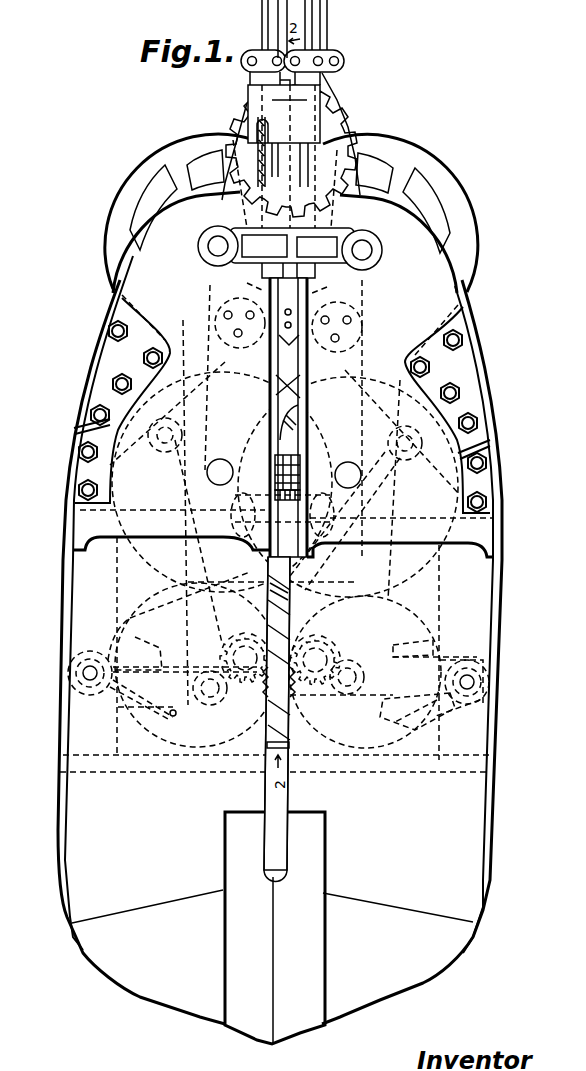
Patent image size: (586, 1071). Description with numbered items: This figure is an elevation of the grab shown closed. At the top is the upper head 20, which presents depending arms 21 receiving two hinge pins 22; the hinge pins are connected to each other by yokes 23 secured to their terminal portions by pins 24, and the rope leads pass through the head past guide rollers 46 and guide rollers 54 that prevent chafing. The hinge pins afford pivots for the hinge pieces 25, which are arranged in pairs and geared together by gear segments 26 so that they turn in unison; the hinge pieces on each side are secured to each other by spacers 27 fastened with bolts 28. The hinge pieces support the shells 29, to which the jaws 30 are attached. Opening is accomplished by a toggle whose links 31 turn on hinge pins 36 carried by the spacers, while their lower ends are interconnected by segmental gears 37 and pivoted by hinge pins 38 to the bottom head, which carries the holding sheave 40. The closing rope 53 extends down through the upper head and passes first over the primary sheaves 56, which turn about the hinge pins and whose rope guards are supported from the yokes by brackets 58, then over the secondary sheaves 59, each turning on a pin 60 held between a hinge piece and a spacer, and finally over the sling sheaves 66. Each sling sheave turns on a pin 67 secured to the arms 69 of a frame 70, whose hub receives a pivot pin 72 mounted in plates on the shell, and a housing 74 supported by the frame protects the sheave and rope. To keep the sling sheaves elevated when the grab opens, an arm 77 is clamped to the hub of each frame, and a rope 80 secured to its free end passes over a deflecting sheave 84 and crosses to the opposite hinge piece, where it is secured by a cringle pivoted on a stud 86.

The upper head 20 is at (340, 110).
The openings in segment 21 is at (228, 170).
The hinge pins 22 is at (208, 246).
The yokes 23 is at (258, 268).
The pins 24 is at (290, 12).
The hinge pieces 25 is at (111, 297).
The gear segments 26 is at (226, 206).
The spacers 27 is at (92, 365).
The bolts 28 is at (108, 330).
The shells 29 is at (63, 612).
The jaws 30 is at (233, 853).
The links 31 is at (177, 517).
The hinge pins 36 is at (154, 441).
The segmental gears 37 is at (243, 697).
The hinge pins 38 is at (223, 639).
The holding sheave 40 is at (304, 435).
The guide rollers 46 is at (330, 52).
The closing rope 53 is at (262, 14).
The guide rollers 54 is at (250, 50).
The sheaves 56 is at (178, 150).
The brackets 58 is at (305, 304).
The sheaves 59 is at (170, 570).
The pin 60 is at (222, 460).
The sheaves 66 is at (125, 627).
The pin 67 is at (201, 704).
The arms 69 is at (457, 637).
The frame 70 is at (485, 660).
The pivot pin 72 is at (83, 674).
The housing 74 is at (158, 739).
The arm 77 is at (110, 703).
The rope 80 is at (212, 393).
The deflecting sheave 84 is at (223, 337).
The stud 86 is at (262, 283).